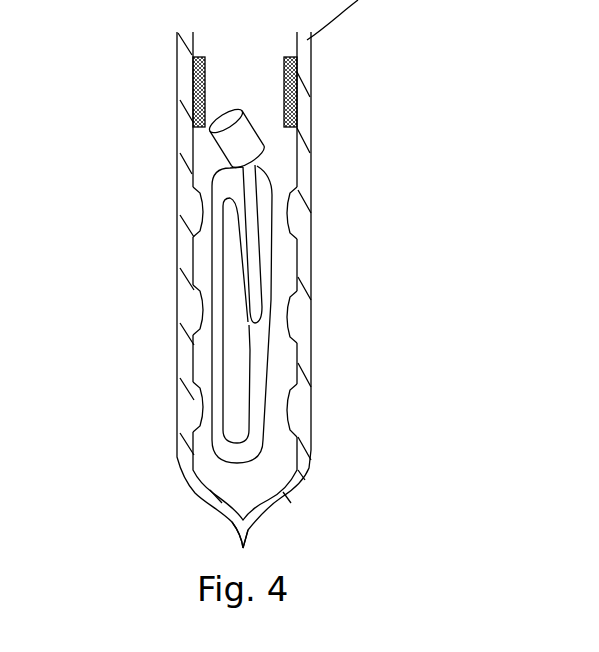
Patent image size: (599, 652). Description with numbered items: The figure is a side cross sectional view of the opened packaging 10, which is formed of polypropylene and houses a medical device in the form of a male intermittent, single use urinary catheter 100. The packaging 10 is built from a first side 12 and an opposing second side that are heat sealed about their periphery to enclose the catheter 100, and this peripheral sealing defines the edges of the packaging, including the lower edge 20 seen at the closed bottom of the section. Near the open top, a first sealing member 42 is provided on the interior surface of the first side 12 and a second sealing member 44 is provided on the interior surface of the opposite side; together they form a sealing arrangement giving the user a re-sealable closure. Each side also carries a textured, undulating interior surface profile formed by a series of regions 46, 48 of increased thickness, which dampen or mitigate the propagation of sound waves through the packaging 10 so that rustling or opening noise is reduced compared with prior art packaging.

The packaging 10 is at (358, 257).
The first side 12 is at (188, 80).
The lower edge 20 is at (252, 533).
The first sealing member 42 is at (193, 58).
The second sealing member 44 is at (298, 73).
The regions of increased thickness 46 is at (197, 213).
The regions of increased thickness 48 is at (292, 208).
The urinary catheter 100 is at (255, 178).